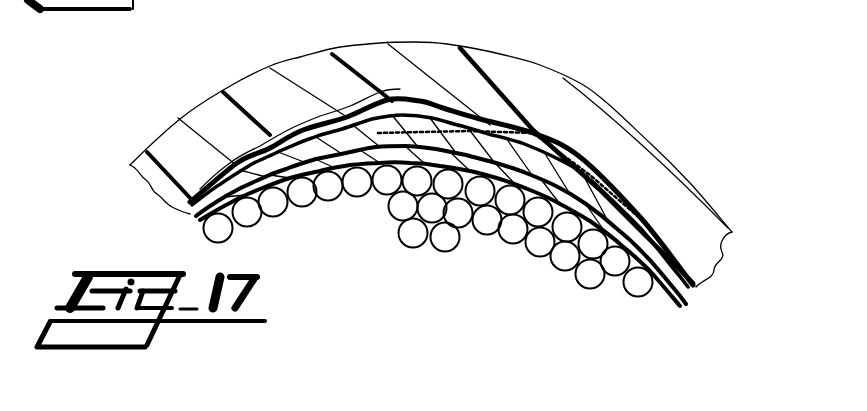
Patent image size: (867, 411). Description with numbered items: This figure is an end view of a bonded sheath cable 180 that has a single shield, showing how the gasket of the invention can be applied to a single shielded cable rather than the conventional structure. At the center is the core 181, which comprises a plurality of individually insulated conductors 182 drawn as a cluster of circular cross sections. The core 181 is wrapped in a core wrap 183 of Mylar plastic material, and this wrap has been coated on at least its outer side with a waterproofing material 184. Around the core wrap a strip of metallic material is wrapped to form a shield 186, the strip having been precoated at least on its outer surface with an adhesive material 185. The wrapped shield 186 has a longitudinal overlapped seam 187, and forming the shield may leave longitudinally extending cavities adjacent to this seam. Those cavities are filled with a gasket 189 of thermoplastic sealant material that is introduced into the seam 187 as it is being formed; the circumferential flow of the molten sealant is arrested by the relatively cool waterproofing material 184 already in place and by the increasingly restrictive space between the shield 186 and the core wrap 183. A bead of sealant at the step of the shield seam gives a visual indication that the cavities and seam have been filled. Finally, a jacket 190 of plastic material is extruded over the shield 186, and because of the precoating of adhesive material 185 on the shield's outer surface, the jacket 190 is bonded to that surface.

The cable 180 is at (151, 124).
The core 181 is at (367, 258).
The individually insulated conductors 182 is at (445, 248).
The core wrap 183 is at (662, 288).
The waterproofing material 184 is at (647, 213).
The adhesive material 185 is at (541, 133).
The shield 186 is at (288, 137).
The longitudinal overlapped seam 187 is at (481, 117).
The gasket 189 is at (407, 123).
The jacket 190 is at (642, 138).